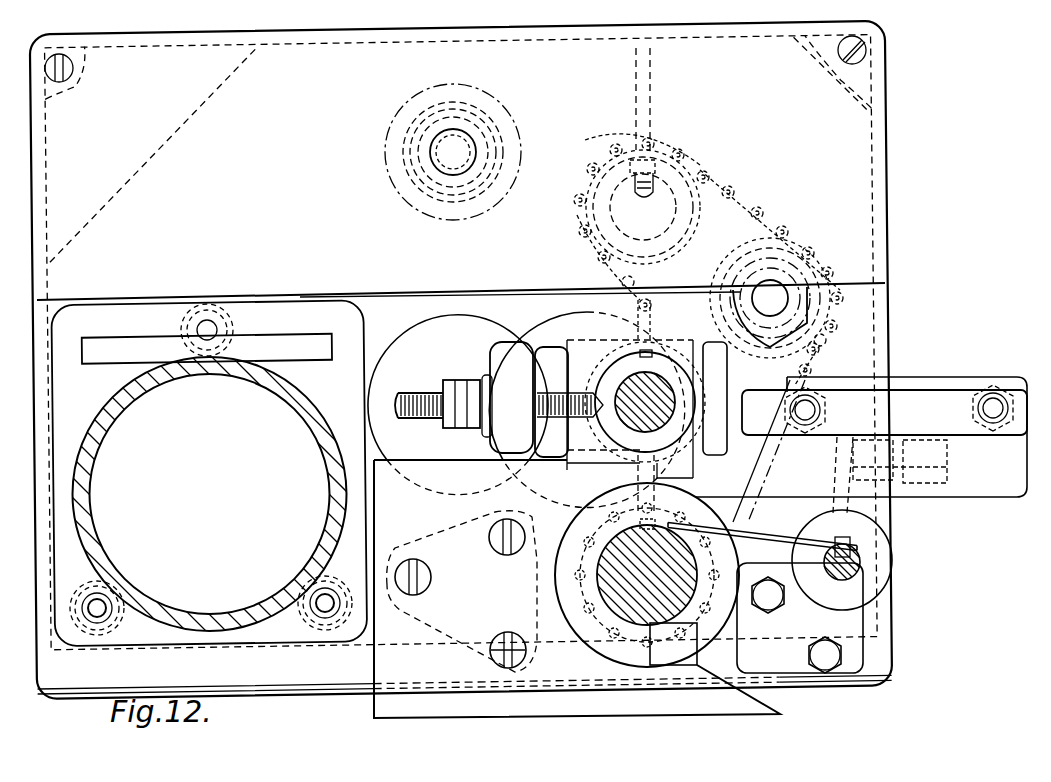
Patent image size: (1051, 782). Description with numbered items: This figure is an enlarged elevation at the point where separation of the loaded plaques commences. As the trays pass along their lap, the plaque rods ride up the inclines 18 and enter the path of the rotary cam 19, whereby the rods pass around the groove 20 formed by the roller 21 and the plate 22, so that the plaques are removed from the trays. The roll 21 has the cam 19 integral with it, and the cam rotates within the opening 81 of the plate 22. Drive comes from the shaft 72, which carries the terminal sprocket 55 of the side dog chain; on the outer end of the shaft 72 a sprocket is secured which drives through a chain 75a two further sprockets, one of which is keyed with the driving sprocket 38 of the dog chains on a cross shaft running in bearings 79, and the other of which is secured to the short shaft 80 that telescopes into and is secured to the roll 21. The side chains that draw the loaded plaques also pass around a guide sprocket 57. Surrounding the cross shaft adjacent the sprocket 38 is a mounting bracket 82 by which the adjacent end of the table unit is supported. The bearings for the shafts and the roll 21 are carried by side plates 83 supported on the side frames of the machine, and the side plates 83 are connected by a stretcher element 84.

The inclines 18 is at (767, 698).
The rotary cam 19 is at (650, 637).
The groove 20 is at (563, 560).
The roller 21 is at (655, 570).
The plate 22 is at (355, 700).
The driving sprocket 38 is at (705, 400).
The terminal sprocket 55 is at (742, 195).
The guide sprocket 57 is at (403, 120).
The shaft 72 is at (697, 148).
The chain 75a is at (775, 468).
The bearings 79 is at (640, 387).
The short shaft 80 is at (637, 578).
The opening 81 is at (557, 582).
The mounting bracket 82 is at (500, 353).
The side plates 83 is at (385, 303).
The stretcher element 84 is at (83, 490).